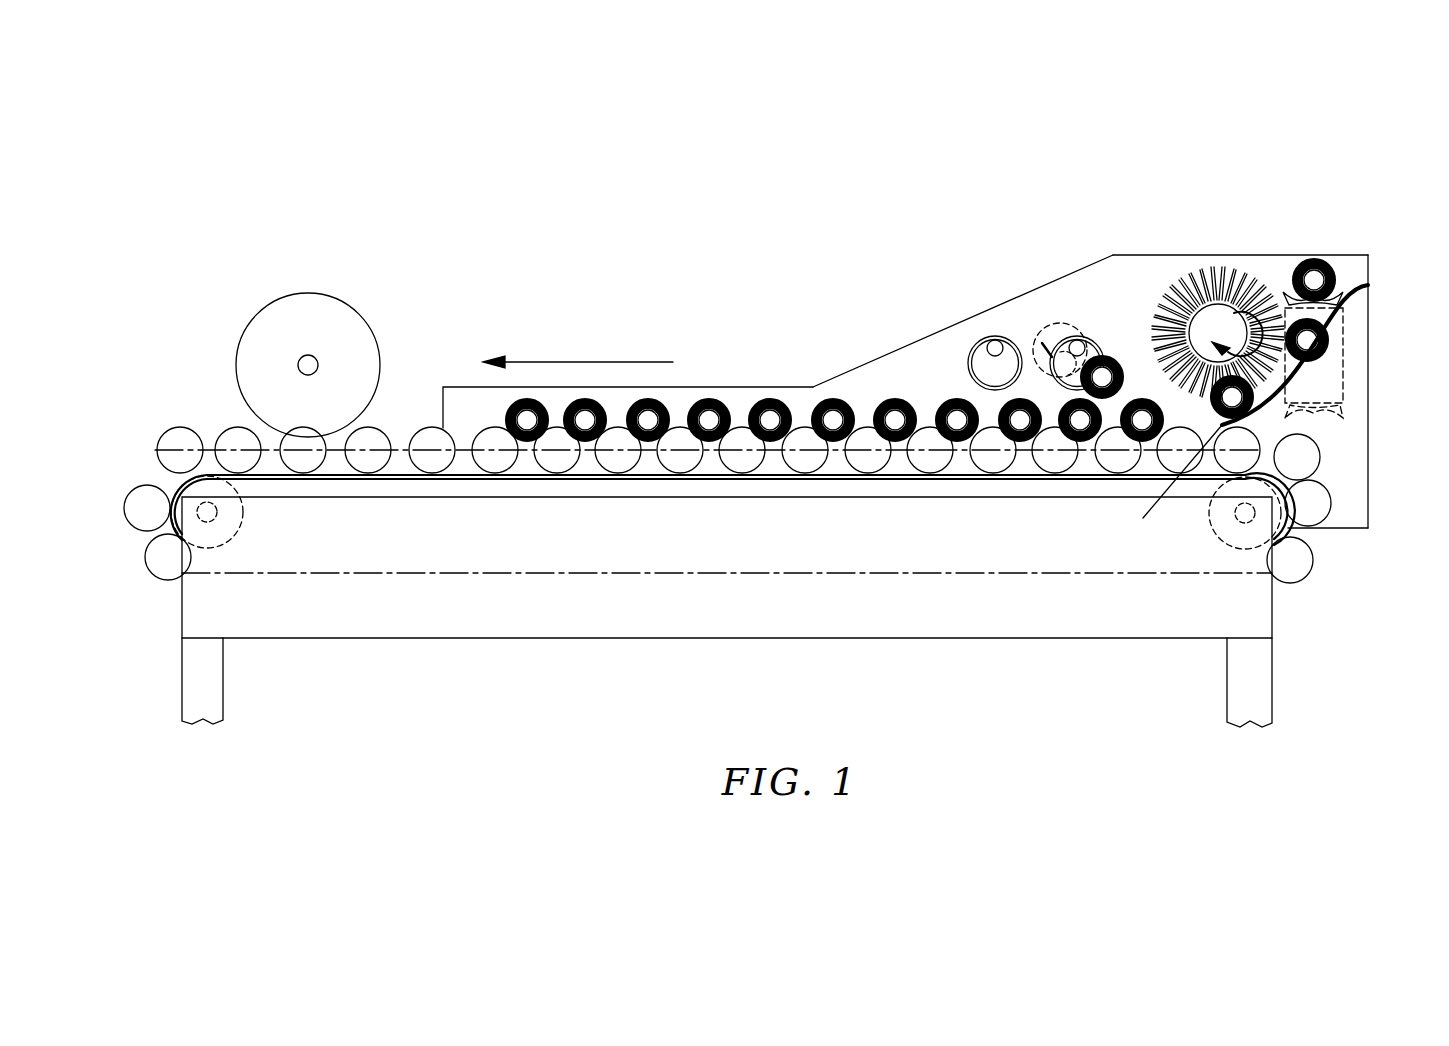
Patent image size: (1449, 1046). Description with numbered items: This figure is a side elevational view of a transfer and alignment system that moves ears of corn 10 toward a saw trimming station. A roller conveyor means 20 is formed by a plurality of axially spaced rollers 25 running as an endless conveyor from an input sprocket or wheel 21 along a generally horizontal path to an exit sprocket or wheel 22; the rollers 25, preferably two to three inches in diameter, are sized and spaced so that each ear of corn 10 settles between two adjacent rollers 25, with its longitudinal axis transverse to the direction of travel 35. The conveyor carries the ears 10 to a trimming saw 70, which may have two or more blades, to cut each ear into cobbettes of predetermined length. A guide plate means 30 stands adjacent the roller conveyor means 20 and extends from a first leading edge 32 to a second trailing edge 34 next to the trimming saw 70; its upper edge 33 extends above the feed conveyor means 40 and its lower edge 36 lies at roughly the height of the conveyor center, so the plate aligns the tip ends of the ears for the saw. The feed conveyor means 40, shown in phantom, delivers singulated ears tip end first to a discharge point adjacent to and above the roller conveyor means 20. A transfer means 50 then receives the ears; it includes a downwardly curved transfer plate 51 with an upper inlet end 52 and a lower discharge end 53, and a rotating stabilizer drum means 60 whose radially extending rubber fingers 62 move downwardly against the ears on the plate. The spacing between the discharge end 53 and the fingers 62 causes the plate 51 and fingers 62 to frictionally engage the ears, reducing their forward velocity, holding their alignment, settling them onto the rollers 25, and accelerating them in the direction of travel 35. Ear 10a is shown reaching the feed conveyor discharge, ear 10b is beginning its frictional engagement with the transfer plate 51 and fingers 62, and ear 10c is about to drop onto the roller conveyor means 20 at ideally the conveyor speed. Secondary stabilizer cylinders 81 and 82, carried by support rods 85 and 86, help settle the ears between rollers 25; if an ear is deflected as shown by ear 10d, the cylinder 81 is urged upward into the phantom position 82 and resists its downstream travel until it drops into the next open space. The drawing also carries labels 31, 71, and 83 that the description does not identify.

The ears of corn 10 is at (660, 403).
The ear of corn 10a is at (1325, 258).
The ear of corn 10b is at (1330, 325).
The ear of corn 10c is at (1250, 410).
The ear of corn 10d is at (1113, 367).
The roller conveyor means 20 is at (1307, 584).
The input sprocket or wheel 21 is at (1242, 533).
The exit sprocket or wheel 22 is at (220, 532).
The rollers 25 is at (608, 462).
The guide plate means 30 is at (1126, 376).
The inclined wall 31 is at (878, 362).
The first leading edge 32 is at (1368, 380).
The upper edge 33 is at (1173, 253).
The second trailing edge 34 is at (443, 398).
The direction of travel 35 is at (547, 365).
The lower edge 36 is at (1340, 530).
The feed conveyor means 40 is at (1347, 342).
The transfer means 50 is at (1288, 237).
The transfer plate 51 is at (1317, 363).
The upper inlet end 52 is at (1368, 283).
The lower discharge end 53 is at (1143, 518).
The rotating stabilizer drum means 60 is at (1238, 274).
The fingers 62 is at (1252, 267).
The trimming saw 70 is at (343, 325).
The axle 71 is at (301, 358).
The secondary stabilizer cylinder 81 is at (1085, 337).
The secondary stabilizer cylinder 82 is at (1063, 323).
The roller 83 is at (973, 353).
The support rod 85 is at (1077, 340).
The support rod 86 is at (990, 343).